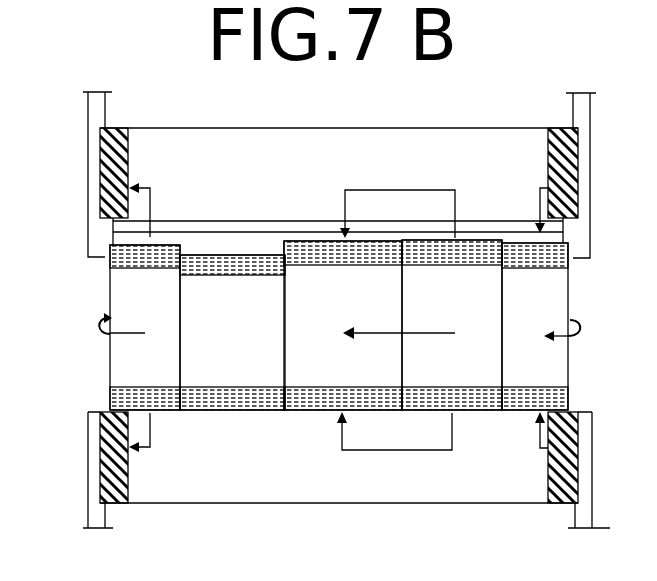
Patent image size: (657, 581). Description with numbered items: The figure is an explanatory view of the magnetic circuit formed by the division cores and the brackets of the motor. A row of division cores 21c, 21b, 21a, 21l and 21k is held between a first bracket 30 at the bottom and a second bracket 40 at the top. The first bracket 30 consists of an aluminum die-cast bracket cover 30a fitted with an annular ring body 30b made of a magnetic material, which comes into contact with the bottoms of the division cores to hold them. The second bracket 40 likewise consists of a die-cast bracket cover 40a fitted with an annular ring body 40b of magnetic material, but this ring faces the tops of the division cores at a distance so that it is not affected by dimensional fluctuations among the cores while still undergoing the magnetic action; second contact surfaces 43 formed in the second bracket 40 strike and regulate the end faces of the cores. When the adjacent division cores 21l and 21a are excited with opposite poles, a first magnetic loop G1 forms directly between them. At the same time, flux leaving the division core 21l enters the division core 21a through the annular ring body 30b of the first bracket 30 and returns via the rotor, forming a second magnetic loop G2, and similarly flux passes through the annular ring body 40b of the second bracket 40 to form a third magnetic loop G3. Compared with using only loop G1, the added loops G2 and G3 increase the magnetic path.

The second bracket 40 is at (310, 141).
The bracket cover 40a is at (88, 177).
The annular ring body (second magnetic member) 40b is at (118, 133).
The second contact surface 43 is at (113, 244).
The first bracket 30 is at (315, 482).
The bracket cover 30a is at (88, 462).
The annular ring body (first magnetic member) 30b is at (135, 503).
The division core 21a is at (360, 312).
The division core 21b is at (248, 312).
The division core 21c is at (162, 312).
The division core 21l is at (465, 312).
The division core 21k is at (553, 312).
The first magnetic loop G1 is at (359, 337).
The second magnetic loop G2 is at (338, 445).
The third magnetic loop G3 is at (338, 201).